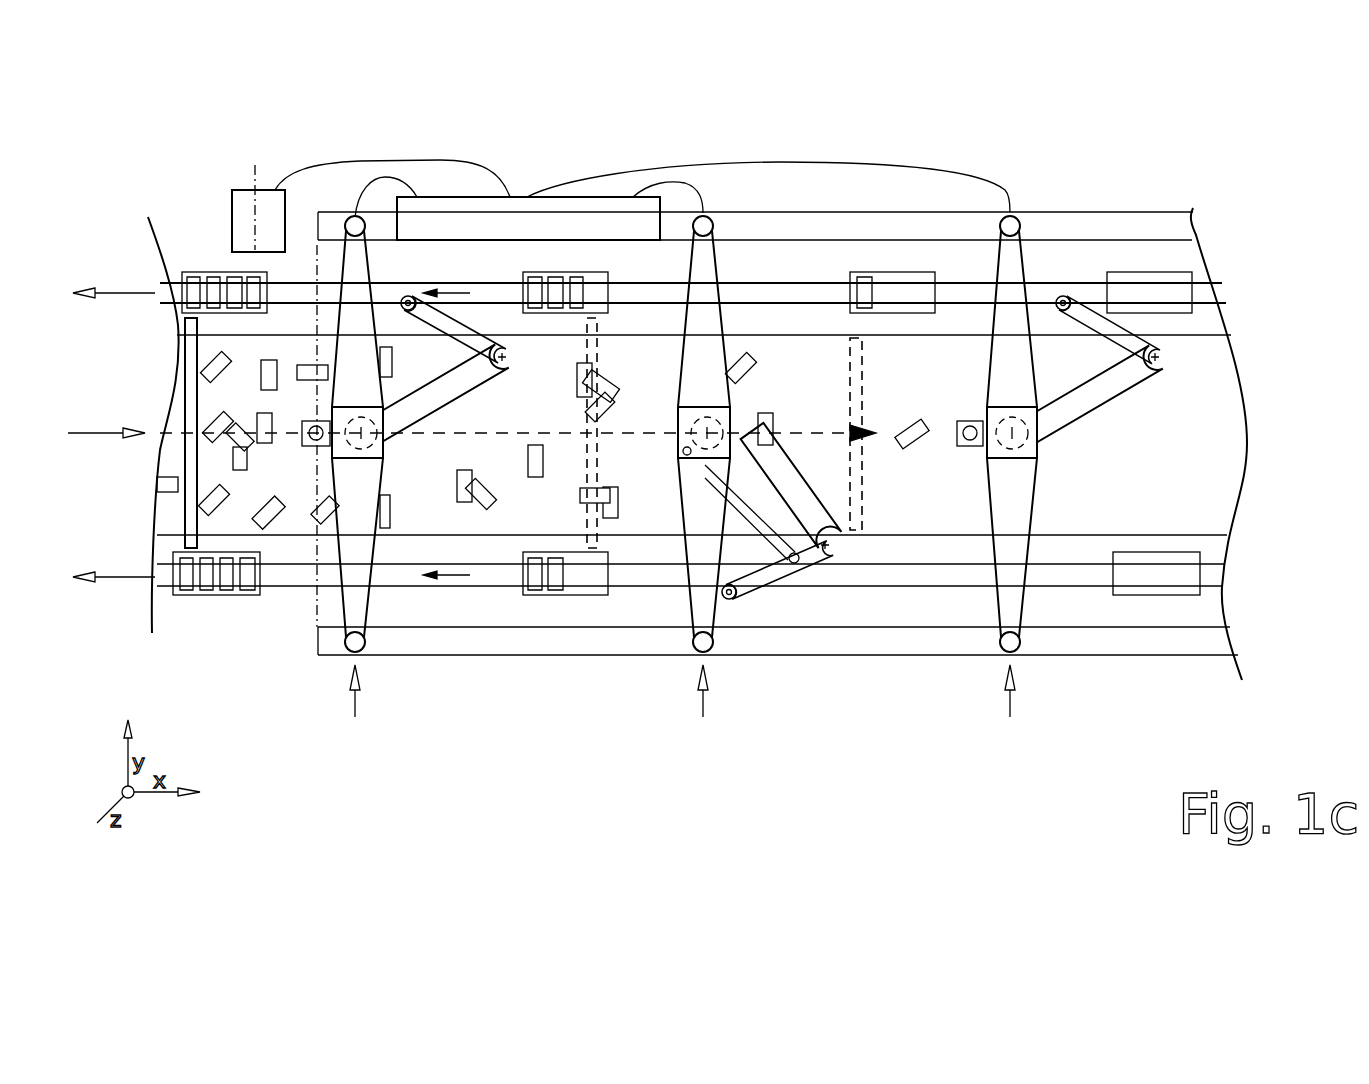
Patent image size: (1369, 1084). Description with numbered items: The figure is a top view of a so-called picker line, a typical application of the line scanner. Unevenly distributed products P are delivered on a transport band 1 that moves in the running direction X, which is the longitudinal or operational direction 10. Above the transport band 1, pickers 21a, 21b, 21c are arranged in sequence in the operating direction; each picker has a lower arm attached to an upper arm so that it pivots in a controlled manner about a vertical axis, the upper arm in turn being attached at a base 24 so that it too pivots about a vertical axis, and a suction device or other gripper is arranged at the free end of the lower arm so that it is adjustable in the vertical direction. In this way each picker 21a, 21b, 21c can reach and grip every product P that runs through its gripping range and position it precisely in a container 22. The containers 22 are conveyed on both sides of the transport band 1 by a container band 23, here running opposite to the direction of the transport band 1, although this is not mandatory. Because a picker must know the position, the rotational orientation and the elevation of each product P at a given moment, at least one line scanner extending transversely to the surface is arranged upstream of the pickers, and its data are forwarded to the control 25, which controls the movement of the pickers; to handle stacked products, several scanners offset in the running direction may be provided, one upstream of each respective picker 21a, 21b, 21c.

The transport band 1 is at (1222, 447).
The longitudinal direction 10 is at (105, 427).
The picker 21a is at (183, 542).
The picker 21b is at (597, 540).
The picker 21c is at (857, 503).
The container 22 is at (203, 268).
The container band 23 is at (1048, 290).
The base 24 is at (669, 434).
The control 25 is at (528, 218).
The product P is at (232, 278).